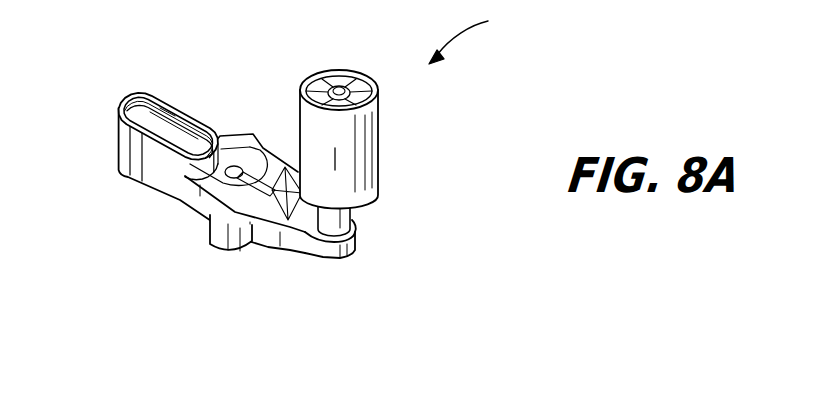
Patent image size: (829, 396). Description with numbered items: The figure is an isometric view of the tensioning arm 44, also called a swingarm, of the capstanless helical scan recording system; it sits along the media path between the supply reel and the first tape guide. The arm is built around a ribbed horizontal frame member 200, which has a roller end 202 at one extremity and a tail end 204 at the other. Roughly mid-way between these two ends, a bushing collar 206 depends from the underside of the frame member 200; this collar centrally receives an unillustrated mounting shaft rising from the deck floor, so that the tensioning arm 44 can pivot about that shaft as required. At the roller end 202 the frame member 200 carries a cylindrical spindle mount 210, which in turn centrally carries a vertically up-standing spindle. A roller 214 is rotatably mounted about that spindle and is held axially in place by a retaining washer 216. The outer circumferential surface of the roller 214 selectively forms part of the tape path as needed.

The tensioning arm 44 is at (476, 32).
The frame member 200 is at (237, 131).
The roller end 202 is at (320, 250).
The tail end 204 is at (119, 142).
The bushing collar 206 is at (218, 242).
The cylindrical spindle mount 210 is at (357, 217).
The roller 214 is at (346, 139).
The retaining washer 216 is at (352, 72).